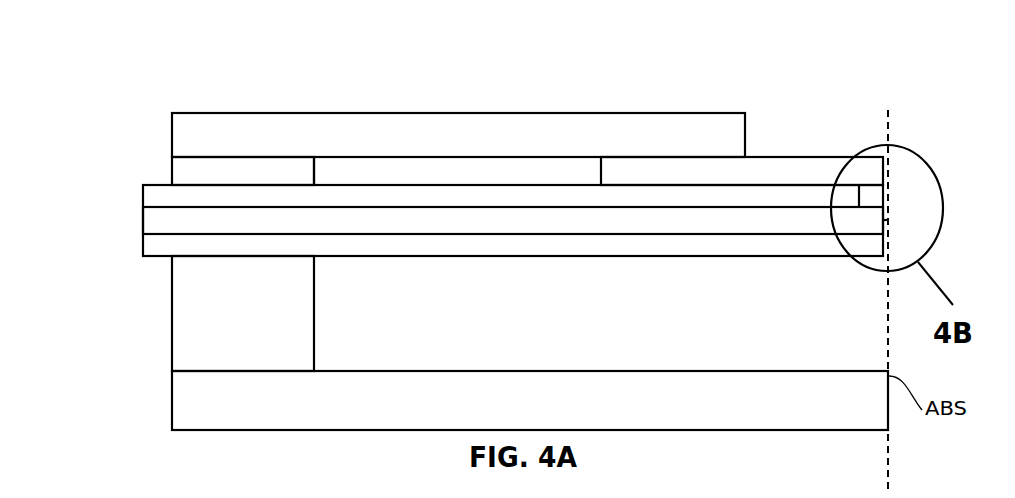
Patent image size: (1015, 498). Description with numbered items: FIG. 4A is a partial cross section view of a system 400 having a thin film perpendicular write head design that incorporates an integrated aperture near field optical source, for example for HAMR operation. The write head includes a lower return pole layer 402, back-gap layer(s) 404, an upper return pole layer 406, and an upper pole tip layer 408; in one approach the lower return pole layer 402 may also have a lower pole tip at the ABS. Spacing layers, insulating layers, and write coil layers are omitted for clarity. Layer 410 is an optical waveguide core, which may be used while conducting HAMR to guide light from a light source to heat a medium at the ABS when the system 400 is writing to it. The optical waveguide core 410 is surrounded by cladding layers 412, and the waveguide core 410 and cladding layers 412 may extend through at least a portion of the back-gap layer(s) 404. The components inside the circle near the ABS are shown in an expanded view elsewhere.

The system 400 is at (115, 78).
The lower return pole layer 402 is at (543, 408).
The back-gap layer(s) 404 is at (261, 180).
The upper return pole layer 406 is at (474, 143).
The upper pole tip layer 408 is at (768, 178).
The optical waveguide core 410 is at (474, 230).
The cladding layers 412 is at (158, 192).